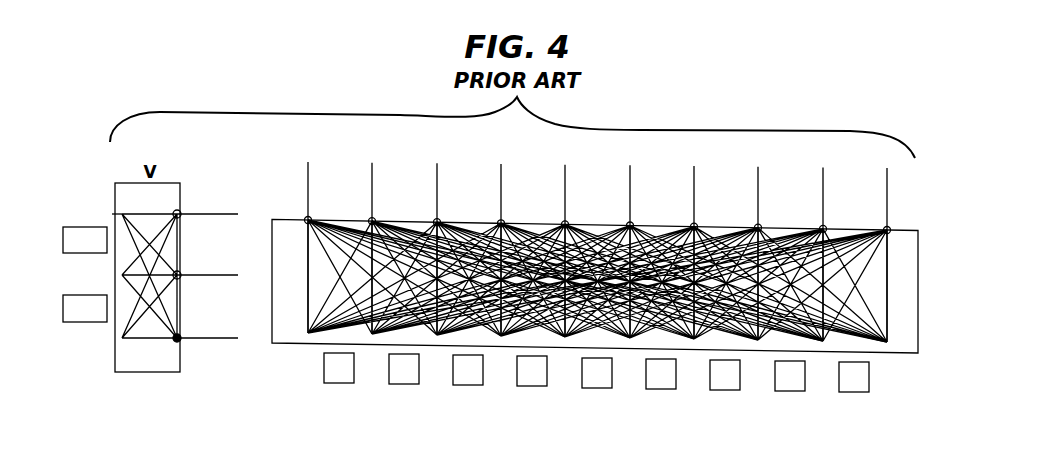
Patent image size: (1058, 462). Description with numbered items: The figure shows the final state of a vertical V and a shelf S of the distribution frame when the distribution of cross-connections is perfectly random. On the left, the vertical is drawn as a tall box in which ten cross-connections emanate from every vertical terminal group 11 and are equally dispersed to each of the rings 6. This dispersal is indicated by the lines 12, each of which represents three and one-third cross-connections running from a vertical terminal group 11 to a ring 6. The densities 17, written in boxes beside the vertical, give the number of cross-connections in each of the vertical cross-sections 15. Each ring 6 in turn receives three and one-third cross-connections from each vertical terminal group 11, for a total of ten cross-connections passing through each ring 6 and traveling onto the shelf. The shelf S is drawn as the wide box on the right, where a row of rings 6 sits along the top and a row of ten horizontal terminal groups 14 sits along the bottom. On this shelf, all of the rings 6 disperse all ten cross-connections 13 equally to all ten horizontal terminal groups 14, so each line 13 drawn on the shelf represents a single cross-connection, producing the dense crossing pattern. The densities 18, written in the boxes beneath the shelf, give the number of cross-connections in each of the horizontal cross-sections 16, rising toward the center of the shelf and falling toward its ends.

The ring 6 is at (181, 211).
The vertical terminal group 11 is at (122, 214).
The line 12 is at (172, 239).
The cross-connection 13 is at (297, 232).
The horizontal terminal group 14 is at (305, 334).
The vertical cross-section 15 is at (170, 294).
The horizontal cross-section 16 is at (305, 290).
The density 17 is at (70, 323).
The density 18 is at (503, 397).